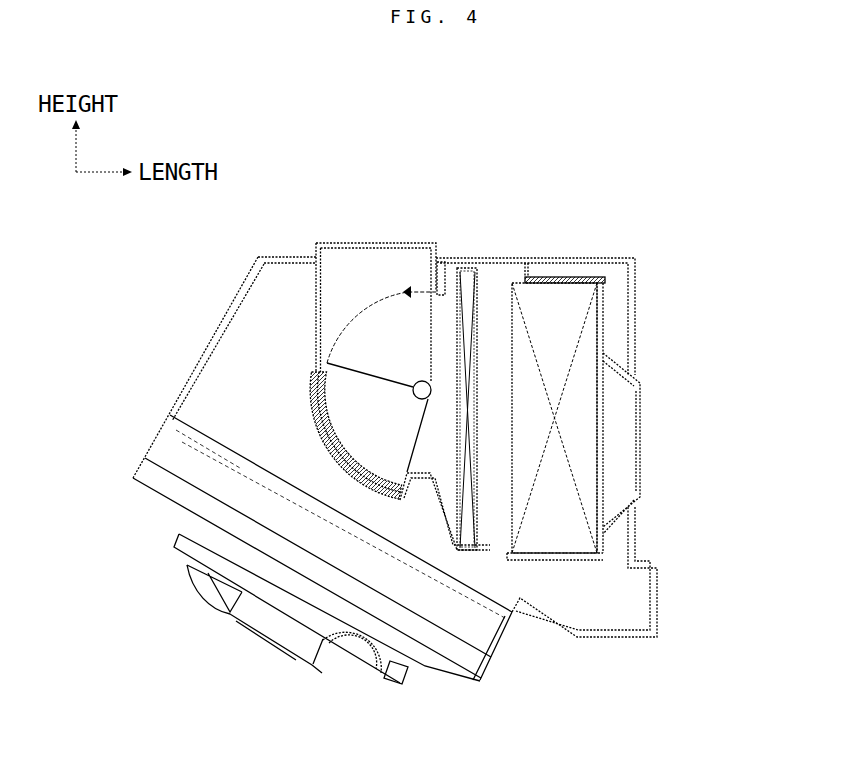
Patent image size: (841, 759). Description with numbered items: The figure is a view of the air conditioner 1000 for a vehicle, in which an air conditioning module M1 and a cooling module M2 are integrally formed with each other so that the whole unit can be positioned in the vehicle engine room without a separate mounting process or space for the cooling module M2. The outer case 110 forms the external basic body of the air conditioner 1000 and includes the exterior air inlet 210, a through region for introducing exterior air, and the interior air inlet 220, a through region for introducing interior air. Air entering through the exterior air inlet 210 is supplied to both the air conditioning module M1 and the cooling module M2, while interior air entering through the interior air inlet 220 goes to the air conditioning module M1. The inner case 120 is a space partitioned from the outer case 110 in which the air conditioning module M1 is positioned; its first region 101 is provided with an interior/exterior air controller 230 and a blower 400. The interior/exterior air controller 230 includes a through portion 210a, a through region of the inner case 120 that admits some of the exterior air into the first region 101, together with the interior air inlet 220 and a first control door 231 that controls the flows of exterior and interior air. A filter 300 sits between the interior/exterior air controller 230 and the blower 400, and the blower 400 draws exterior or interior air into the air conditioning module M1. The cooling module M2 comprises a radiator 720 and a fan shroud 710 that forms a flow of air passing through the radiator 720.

The air conditioner for a vehicle 1000 is at (631, 213).
The outer case 110 is at (232, 292).
The inner case 120 is at (309, 297).
The interior air inlet 220 is at (370, 263).
The interior/exterior air controller 230 is at (408, 288).
The first control door 231 is at (309, 373).
The filter 300 is at (470, 264).
The blower 400 is at (556, 303).
The air conditioning module M1 is at (611, 316).
The first region 101 is at (583, 409).
The exterior air inlet 210 is at (642, 612).
The through portion 210a is at (305, 413).
The radiator 720 is at (497, 631).
The fan shroud 710 is at (410, 670).
The cooling module M2 is at (247, 650).